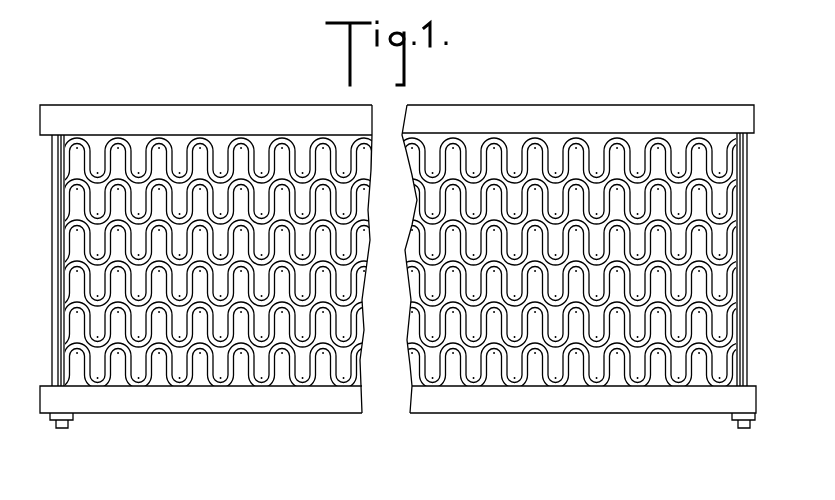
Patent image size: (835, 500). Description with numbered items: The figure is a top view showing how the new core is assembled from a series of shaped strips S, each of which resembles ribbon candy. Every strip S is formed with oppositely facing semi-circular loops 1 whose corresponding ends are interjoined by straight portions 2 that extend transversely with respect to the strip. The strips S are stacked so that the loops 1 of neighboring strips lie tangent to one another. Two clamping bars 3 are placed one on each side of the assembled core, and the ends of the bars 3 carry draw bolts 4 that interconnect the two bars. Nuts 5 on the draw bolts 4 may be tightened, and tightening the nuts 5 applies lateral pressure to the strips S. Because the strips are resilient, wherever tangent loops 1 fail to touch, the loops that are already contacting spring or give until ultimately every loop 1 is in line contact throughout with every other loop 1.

The semi-circular loops 1 is at (575, 342).
The straight portions 2 is at (665, 360).
The clamping bars 3 is at (548, 113).
The draw bolts 4 is at (52, 357).
The nuts 5 is at (54, 424).
The strips S is at (412, 378).